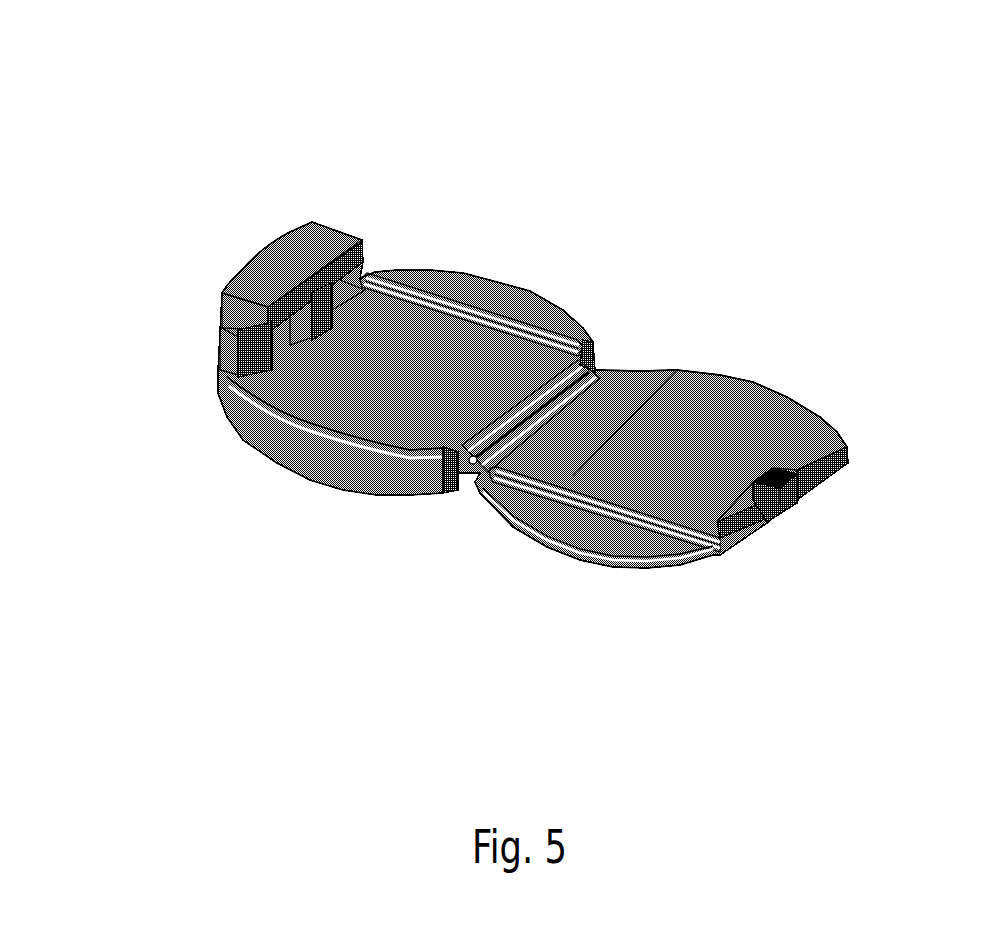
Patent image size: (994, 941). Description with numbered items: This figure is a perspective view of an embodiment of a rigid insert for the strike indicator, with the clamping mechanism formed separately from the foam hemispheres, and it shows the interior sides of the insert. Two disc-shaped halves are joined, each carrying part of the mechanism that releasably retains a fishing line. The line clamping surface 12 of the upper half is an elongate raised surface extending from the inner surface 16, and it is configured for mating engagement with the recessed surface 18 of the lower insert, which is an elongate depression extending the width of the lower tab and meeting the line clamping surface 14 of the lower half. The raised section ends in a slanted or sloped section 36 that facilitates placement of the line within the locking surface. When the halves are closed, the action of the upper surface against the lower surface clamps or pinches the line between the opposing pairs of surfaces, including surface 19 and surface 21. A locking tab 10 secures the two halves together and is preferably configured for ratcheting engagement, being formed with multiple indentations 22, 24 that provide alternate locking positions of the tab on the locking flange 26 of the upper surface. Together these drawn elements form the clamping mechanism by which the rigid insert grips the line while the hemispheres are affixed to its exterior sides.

The locking tab 10 is at (232, 282).
The line clamping surface of the upper hemisphere 12 is at (693, 417).
The line clamping surface of the lower hemisphere 14 is at (297, 427).
The inner surface of the upper hemisphere 16 is at (618, 538).
The recessed surface 18 is at (413, 380).
The clamping surface 19 is at (420, 283).
The clamping surface 21 is at (787, 398).
The indentation 22 is at (256, 334).
The indentation 24 is at (258, 326).
The locking flange 26 is at (765, 530).
The sloped section 36 is at (610, 403).